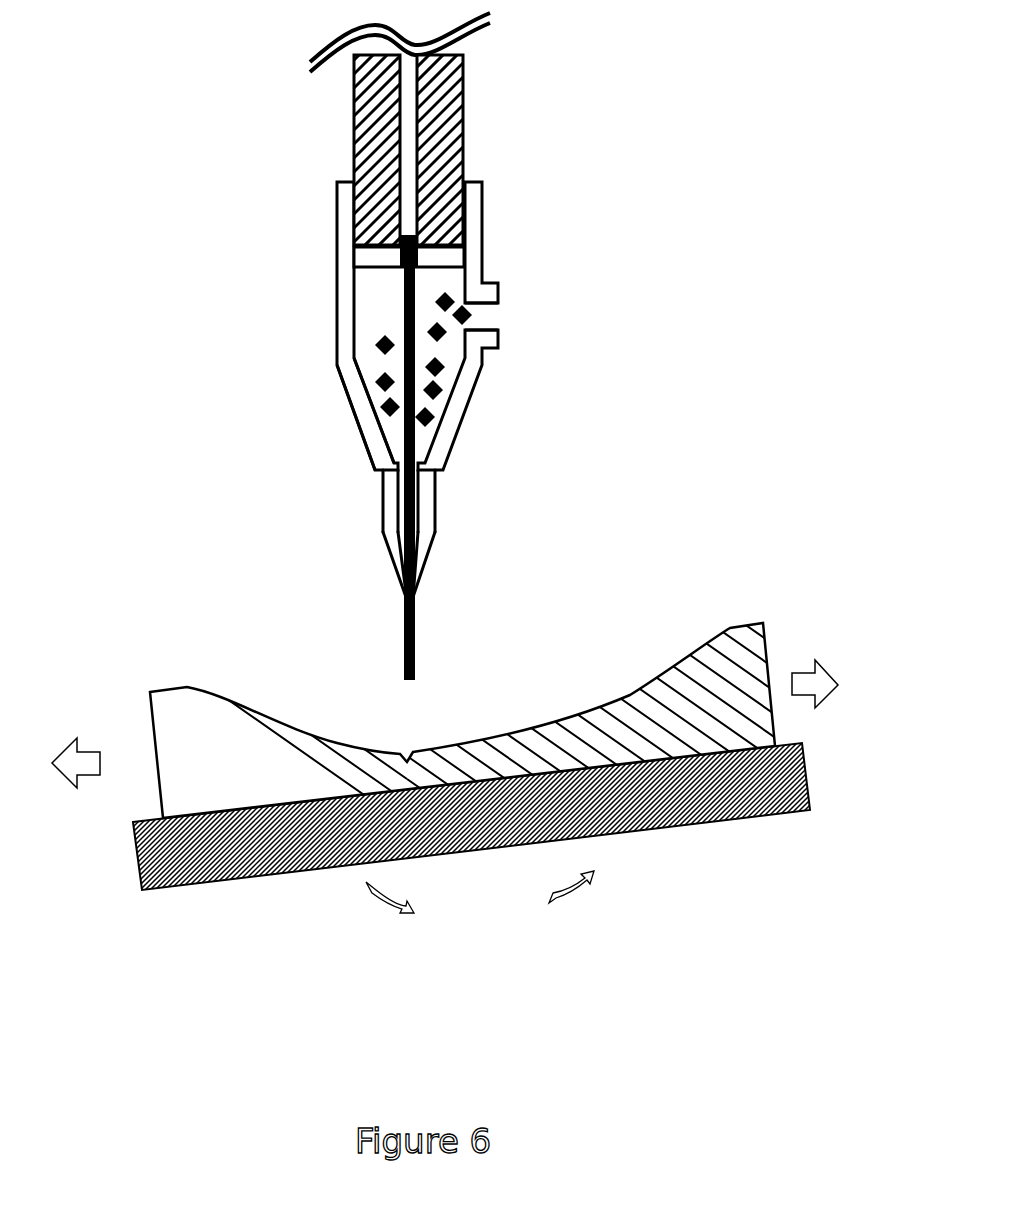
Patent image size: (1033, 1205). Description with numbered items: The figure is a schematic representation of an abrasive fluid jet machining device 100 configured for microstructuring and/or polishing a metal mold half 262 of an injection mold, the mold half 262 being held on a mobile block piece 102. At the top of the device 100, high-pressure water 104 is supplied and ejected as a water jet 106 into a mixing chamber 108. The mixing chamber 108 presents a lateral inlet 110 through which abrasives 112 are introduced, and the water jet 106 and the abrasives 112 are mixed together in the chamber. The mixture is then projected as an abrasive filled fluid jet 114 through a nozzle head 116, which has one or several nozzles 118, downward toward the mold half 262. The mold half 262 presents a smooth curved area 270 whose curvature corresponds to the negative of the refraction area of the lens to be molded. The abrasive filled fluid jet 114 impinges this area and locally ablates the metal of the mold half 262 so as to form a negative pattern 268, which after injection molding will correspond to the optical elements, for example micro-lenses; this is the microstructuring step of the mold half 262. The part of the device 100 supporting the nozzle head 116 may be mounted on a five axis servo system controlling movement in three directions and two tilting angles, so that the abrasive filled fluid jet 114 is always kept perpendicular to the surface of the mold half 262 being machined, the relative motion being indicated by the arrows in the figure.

The abrasive filled jet machining device 100 is at (593, 222).
The mobile block piece 102 is at (810, 782).
The high-pressure water 104 is at (412, 125).
The water jet 106 is at (385, 322).
The mixing chamber 108 is at (370, 370).
The inlet 110 is at (508, 317).
The abrasives 112 is at (447, 345).
The abrasive filled fluid jet 114 is at (432, 670).
The nozzle head 116 is at (455, 518).
The nozzle 118 is at (395, 600).
The concave mold half 262 is at (660, 747).
The negative pattern 268 is at (350, 795).
The smooth curved area 270 is at (674, 668).